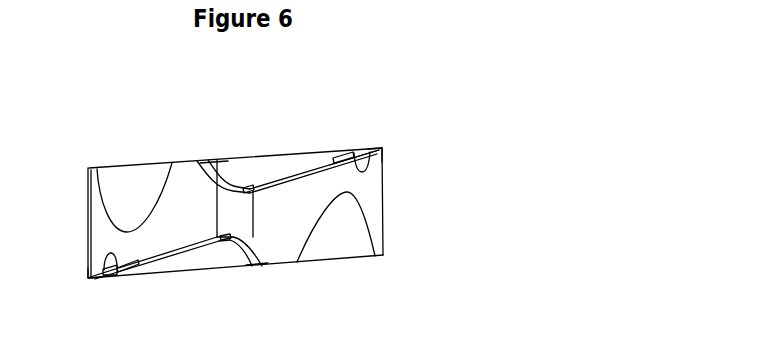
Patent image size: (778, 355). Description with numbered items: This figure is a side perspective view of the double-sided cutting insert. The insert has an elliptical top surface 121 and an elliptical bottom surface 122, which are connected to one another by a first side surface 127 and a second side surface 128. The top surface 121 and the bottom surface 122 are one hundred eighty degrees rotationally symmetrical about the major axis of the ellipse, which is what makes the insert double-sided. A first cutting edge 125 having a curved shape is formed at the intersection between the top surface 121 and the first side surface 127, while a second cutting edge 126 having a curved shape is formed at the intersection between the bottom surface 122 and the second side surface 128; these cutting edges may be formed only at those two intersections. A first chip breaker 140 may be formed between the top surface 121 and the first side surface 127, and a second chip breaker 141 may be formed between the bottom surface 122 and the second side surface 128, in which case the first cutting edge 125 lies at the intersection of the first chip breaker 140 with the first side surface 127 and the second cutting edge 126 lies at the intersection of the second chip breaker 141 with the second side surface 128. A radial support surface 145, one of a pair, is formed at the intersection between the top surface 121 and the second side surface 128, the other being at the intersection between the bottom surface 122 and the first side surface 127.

The top surface 121 is at (134, 166).
The bottom surface 122 is at (338, 262).
The first cutting edge 125 is at (383, 148).
The second cutting edge 126 is at (88, 278).
The first side surface 127 is at (383, 195).
The second side surface 128 is at (88, 226).
The first chip breaker 140 is at (348, 149).
The second chip breaker 141 is at (115, 280).
The radial support surface 145 is at (120, 186).